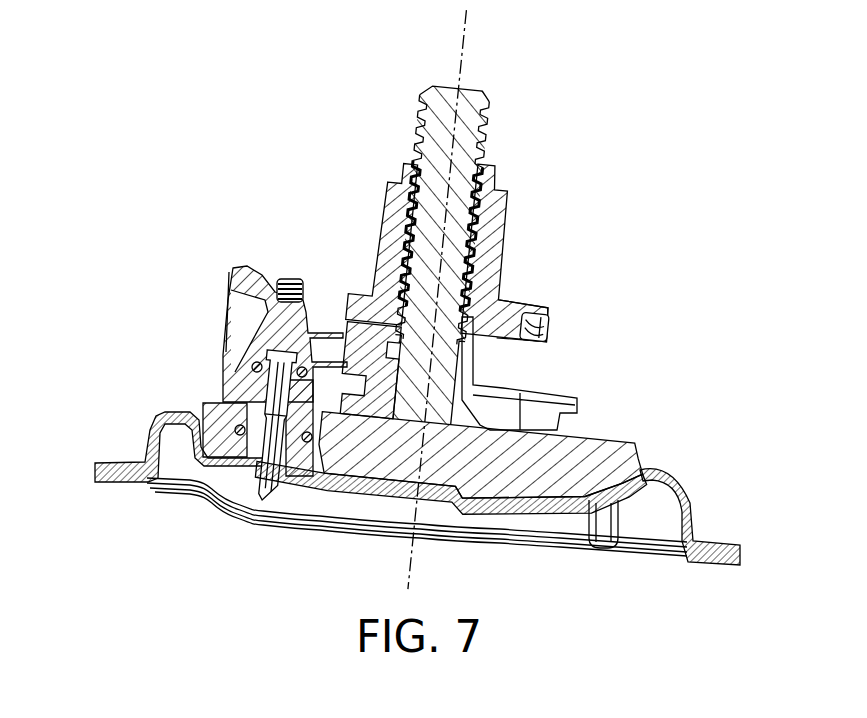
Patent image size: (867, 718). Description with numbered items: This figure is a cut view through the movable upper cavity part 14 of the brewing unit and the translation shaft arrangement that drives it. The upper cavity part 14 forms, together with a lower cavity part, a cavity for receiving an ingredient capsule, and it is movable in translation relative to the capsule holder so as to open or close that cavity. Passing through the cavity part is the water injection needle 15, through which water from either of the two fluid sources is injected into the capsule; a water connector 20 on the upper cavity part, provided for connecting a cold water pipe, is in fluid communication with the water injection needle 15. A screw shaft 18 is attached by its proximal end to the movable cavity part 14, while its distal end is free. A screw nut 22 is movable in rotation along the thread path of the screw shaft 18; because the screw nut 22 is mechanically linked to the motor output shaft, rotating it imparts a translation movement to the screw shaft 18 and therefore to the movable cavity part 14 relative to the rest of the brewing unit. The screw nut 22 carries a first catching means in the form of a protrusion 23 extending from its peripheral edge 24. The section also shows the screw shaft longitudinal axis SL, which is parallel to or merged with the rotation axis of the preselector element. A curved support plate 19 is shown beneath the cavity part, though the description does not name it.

The upper cavity part 14 is at (650, 434).
The water injection needle 15 is at (285, 496).
The screw shaft 18 is at (459, 90).
The support plate 19 is at (500, 508).
The water connector 20 is at (290, 279).
The screw nut 22 is at (508, 223).
The protrusion 23 is at (548, 326).
The peripheral edge 24 is at (524, 300).
The screw shaft longitudinal axis SL is at (458, 298).